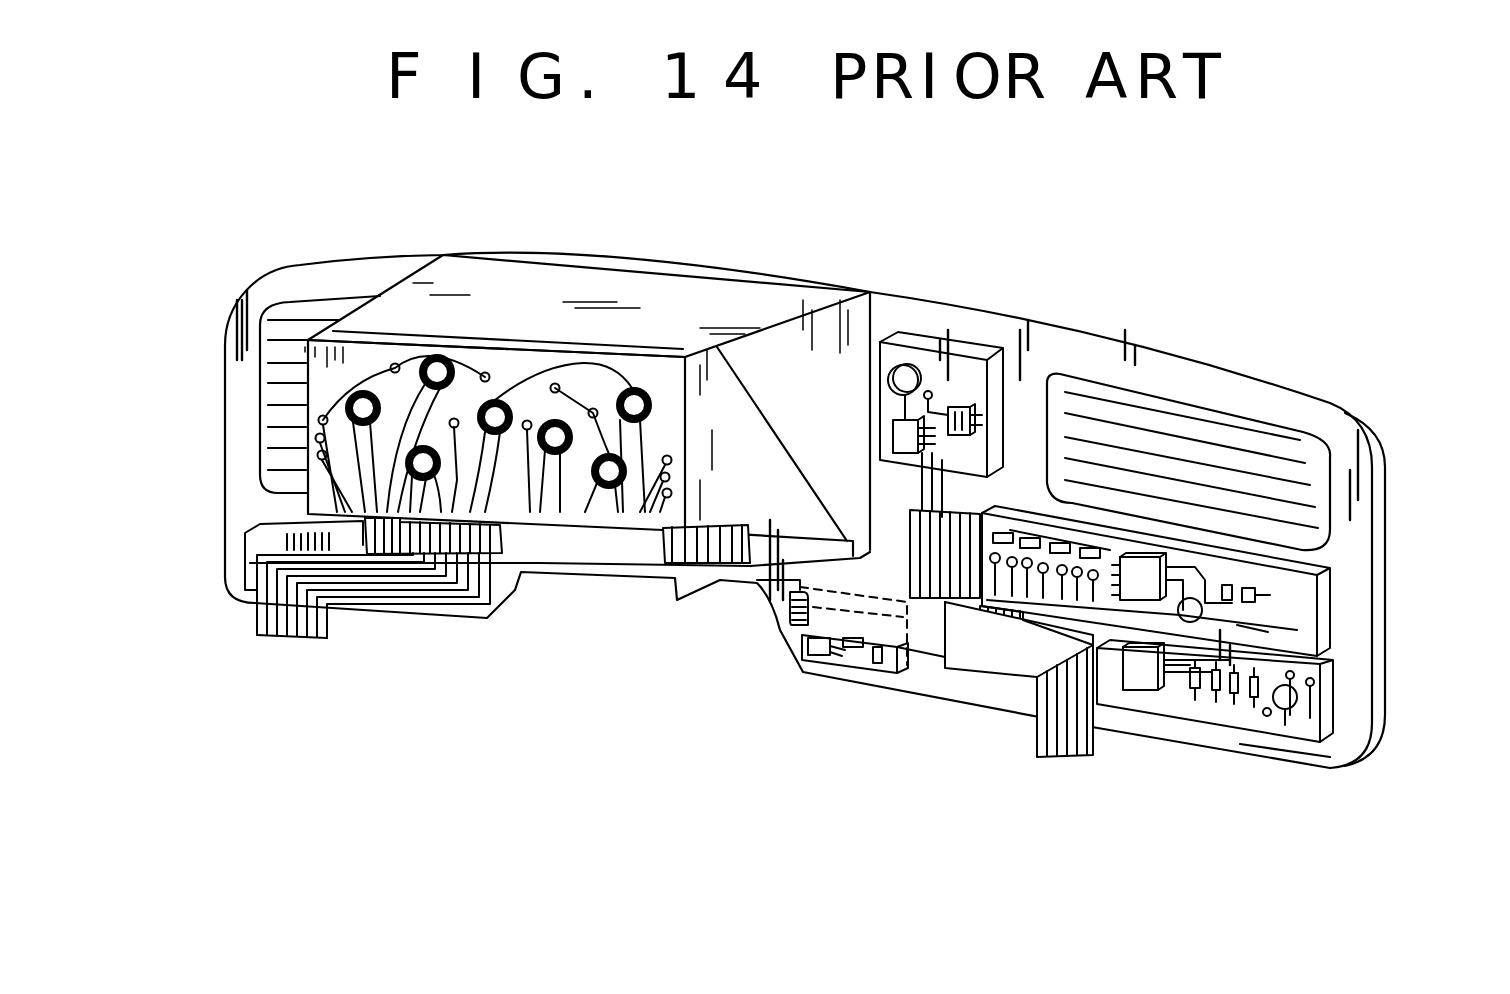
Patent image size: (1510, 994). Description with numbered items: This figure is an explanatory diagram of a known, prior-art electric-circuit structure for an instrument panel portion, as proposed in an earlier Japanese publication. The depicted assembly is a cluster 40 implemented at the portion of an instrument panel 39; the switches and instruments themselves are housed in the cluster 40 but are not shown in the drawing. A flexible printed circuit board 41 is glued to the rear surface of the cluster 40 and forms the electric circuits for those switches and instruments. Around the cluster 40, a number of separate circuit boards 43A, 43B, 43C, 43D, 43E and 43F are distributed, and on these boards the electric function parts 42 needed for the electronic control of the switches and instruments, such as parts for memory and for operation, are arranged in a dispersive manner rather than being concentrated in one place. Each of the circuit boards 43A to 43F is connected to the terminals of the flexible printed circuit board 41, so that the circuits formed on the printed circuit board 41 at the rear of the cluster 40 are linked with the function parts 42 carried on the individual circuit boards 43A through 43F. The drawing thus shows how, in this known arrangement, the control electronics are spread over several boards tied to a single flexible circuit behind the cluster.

The instrument panel 39 is at (940, 305).
The cluster 40 is at (747, 285).
The flexible printed circuit board 41 is at (676, 590).
The electric function parts 42 is at (820, 657).
The circuit board 43A is at (860, 670).
The circuit board 43B is at (1220, 717).
The circuit board 43C is at (1320, 575).
The circuit board 43D is at (963, 365).
The circuit board 43E is at (250, 563).
The circuit board 43F is at (553, 527).